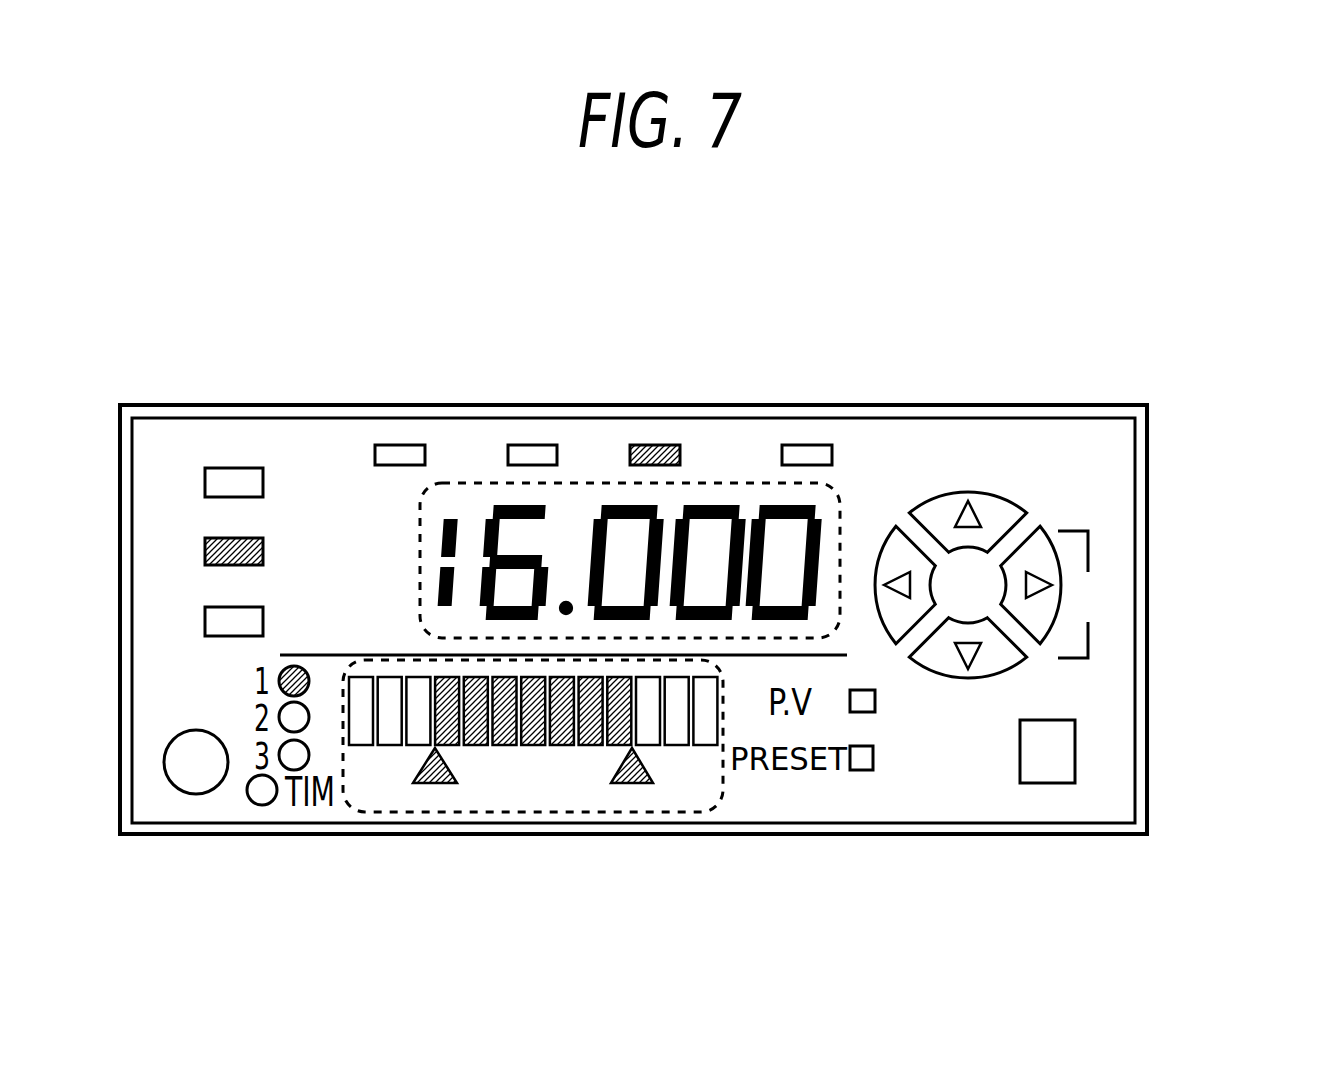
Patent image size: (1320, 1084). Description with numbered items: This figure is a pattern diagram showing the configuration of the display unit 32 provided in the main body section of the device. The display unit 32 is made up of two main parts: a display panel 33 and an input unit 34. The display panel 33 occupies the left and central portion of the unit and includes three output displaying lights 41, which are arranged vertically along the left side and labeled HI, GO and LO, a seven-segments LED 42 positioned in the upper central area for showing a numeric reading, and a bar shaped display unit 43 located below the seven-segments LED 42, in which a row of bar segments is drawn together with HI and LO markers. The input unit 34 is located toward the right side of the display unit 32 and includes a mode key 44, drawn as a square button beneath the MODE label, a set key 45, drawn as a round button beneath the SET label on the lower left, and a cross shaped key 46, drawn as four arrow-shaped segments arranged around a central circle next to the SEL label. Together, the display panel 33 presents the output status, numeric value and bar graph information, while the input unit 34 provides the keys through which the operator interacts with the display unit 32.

The display unit 32 is at (1190, 317).
The display panel 33 is at (1143, 345).
The input unit 34 is at (1213, 420).
The output displaying lights 41 is at (225, 478).
The seven-segments LED 42 is at (518, 485).
The bar shaped display unit 43 is at (553, 812).
The mode key 44 is at (1060, 745).
The set key 45 is at (187, 762).
The cross shaped key 46 is at (1030, 540).